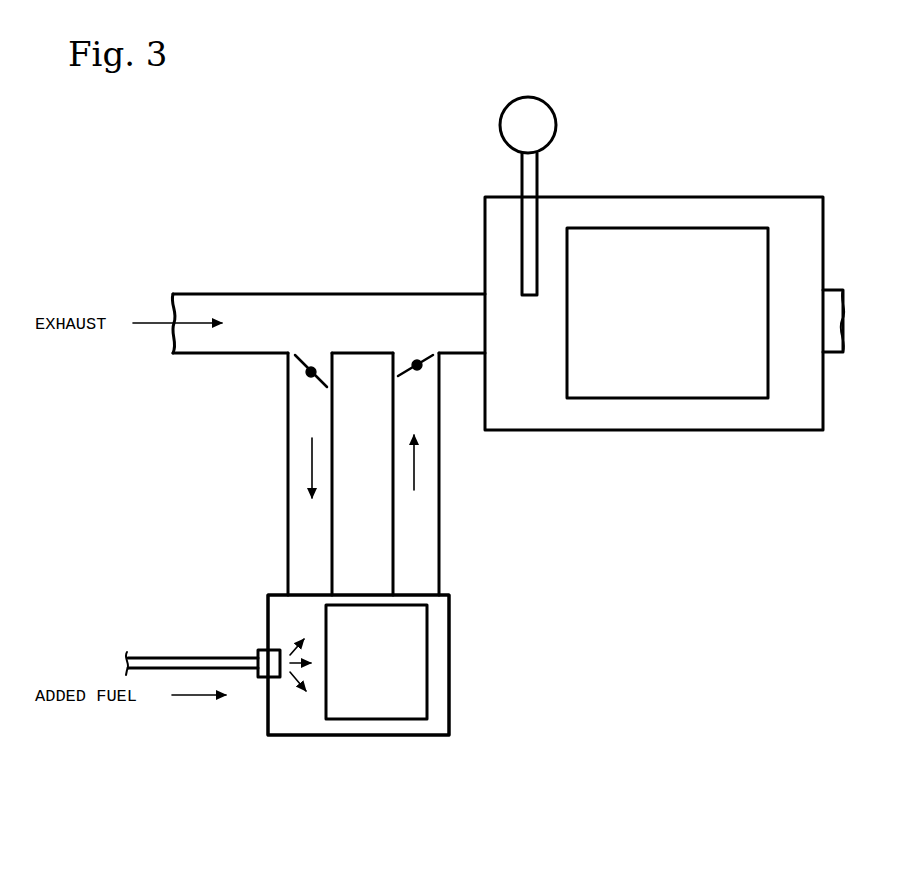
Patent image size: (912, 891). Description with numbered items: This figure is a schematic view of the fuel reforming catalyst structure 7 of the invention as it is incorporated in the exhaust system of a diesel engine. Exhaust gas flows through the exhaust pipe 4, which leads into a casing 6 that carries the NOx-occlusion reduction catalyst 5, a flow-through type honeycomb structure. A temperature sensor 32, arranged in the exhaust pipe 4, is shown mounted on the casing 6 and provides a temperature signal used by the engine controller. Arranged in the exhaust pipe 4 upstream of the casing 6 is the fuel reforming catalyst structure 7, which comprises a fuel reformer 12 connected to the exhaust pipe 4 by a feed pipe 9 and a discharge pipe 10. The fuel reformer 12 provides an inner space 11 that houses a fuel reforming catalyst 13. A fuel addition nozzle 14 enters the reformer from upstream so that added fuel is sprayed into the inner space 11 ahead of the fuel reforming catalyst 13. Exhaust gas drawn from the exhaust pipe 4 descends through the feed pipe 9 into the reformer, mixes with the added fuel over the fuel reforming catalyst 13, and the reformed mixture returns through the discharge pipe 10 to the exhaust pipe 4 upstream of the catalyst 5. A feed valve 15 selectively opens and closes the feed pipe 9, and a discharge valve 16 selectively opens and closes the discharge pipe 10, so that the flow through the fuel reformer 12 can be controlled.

The exhaust pipe 4 is at (283, 294).
The NOx-occlusion reduction catalyst 5 is at (665, 250).
The casing 6 is at (762, 196).
The fuel reforming catalyst structure 7 is at (412, 752).
The feed pipe 9 is at (288, 517).
The discharge pipe 10 is at (440, 522).
The inner space 11 is at (293, 716).
The fuel reformer 12 is at (353, 737).
The fuel reforming catalyst 13 is at (408, 690).
The fuel addition nozzle 14 is at (258, 652).
The feed valve 15 is at (298, 362).
The discharge valve 16 is at (428, 362).
The temperature sensor 32 is at (528, 97).